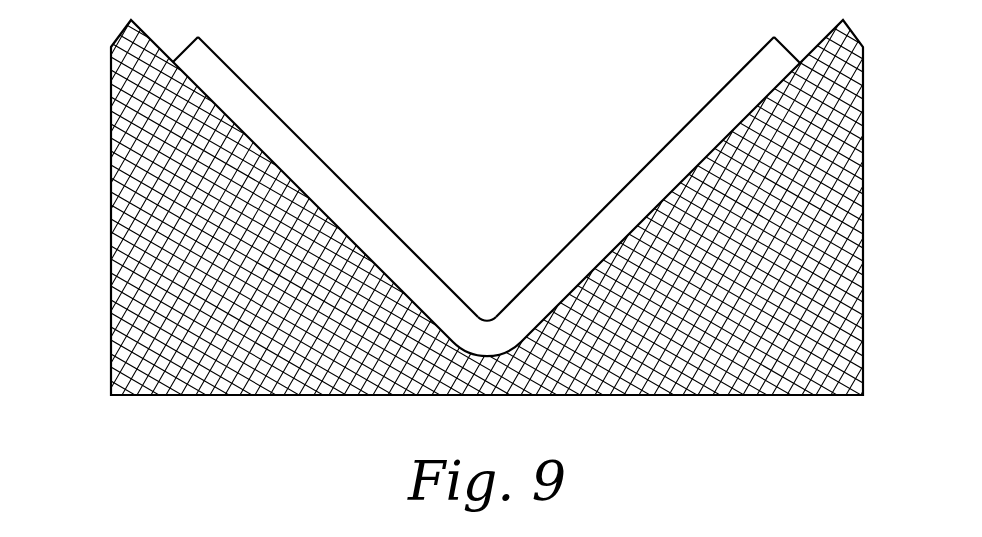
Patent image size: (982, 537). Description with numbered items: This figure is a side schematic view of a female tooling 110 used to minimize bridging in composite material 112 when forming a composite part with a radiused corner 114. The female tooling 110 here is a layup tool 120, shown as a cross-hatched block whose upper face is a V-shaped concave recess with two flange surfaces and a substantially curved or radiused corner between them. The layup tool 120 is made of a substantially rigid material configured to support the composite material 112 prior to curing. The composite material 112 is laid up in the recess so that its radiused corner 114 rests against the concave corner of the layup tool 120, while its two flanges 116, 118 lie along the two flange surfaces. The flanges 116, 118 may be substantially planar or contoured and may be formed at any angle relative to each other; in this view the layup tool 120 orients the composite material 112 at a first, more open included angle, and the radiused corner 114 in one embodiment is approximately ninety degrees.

The female tooling 110 is at (488, 207).
The composite material 112 is at (486, 186).
The radiused corner 114 is at (493, 335).
The first flange 116 is at (310, 153).
The second flange 118 is at (606, 207).
The layup tool 120 is at (89, 256).